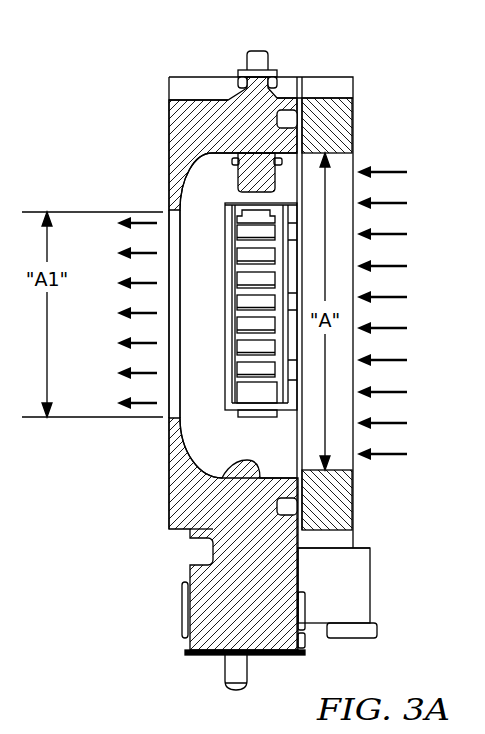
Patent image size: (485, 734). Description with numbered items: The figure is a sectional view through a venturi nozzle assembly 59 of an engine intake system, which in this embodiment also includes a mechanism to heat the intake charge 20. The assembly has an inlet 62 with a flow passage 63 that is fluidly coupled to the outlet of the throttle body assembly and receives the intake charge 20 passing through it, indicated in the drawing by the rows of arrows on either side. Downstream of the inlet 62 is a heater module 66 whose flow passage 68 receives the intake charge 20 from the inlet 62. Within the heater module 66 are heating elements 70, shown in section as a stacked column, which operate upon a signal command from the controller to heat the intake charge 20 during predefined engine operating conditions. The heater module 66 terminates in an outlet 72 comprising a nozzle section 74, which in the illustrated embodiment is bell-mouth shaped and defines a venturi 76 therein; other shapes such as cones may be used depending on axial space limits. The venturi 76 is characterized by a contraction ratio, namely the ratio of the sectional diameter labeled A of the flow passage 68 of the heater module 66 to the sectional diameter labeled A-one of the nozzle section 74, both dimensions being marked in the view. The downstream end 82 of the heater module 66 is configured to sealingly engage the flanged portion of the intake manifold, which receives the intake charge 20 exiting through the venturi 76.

The intake charge 20 is at (108, 326).
The venturi nozzle assembly 59 is at (287, 58).
The inlet 62 is at (343, 120).
The flow passage 63 is at (338, 474).
The heater module 66 is at (196, 82).
The flow passage 68 is at (207, 475).
The heating elements 70 is at (278, 353).
The outlet 72 is at (188, 309).
The nozzle section 74 is at (199, 189).
The venturi 76 is at (168, 418).
The downstream end 82 is at (168, 130).